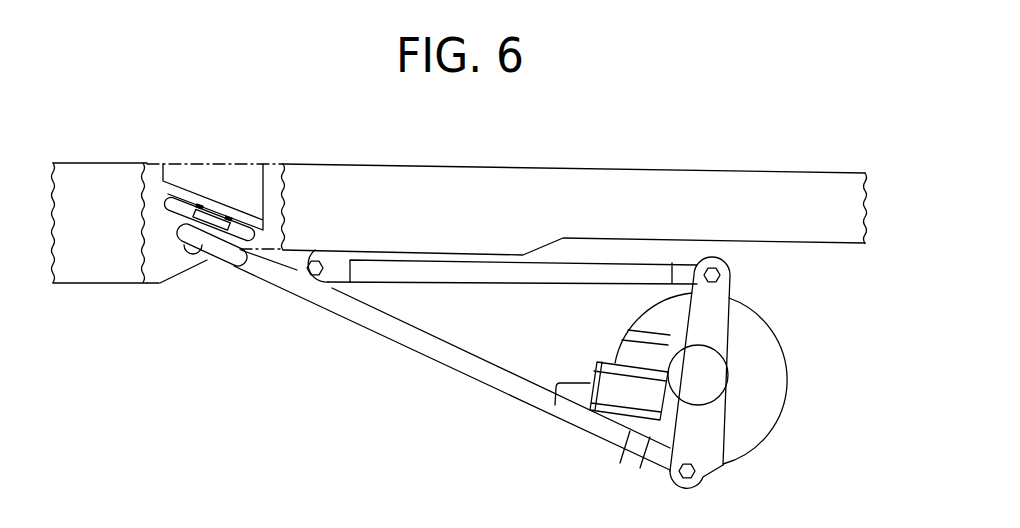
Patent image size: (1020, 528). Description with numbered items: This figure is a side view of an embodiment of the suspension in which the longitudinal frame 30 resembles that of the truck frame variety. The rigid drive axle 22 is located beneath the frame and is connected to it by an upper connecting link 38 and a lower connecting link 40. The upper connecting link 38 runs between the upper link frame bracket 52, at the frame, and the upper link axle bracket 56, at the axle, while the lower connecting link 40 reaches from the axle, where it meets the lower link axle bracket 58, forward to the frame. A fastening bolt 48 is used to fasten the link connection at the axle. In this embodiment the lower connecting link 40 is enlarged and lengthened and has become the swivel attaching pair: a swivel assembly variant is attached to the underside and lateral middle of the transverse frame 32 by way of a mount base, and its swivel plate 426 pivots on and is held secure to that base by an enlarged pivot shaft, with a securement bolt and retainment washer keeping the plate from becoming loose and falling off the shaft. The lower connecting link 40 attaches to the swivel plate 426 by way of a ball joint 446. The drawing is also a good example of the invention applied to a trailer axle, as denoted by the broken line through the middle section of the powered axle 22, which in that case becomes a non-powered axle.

The rigid drive axle 22 is at (770, 368).
The longitudinal frame 30 is at (470, 188).
The transverse frame 32 is at (230, 182).
The upper connecting link 38 is at (543, 273).
The lower connecting link 40 is at (442, 357).
The fastening bolt 48 is at (672, 476).
The upper link frame bracket 52 is at (297, 270).
The upper link axle bracket 56 is at (731, 291).
The lower link axle bracket 58 is at (698, 447).
The swivel plate 426 is at (164, 184).
The ball joint 446 is at (190, 258).